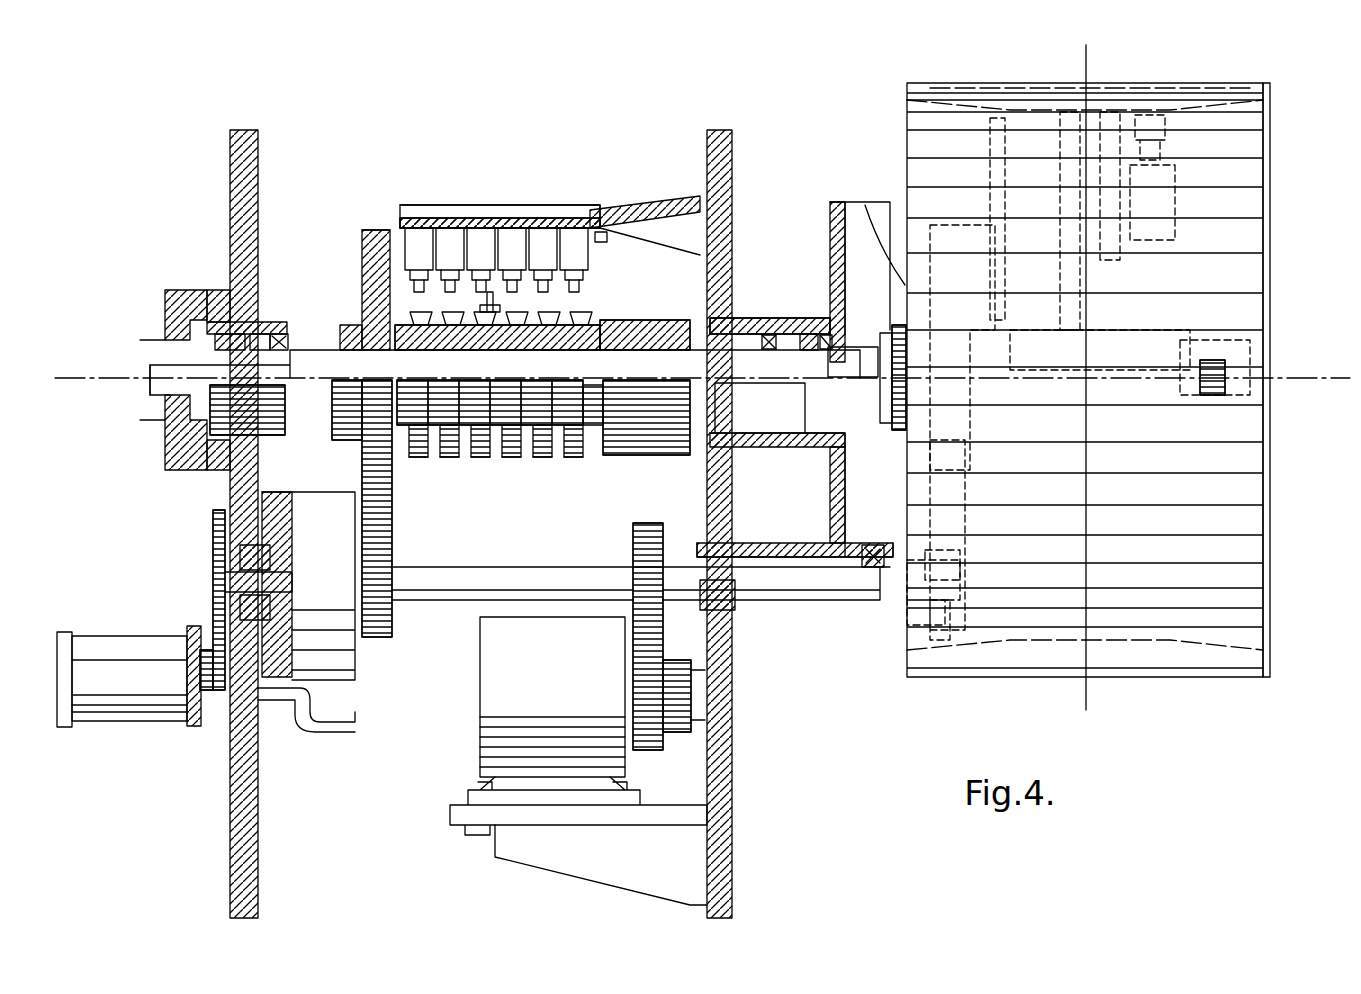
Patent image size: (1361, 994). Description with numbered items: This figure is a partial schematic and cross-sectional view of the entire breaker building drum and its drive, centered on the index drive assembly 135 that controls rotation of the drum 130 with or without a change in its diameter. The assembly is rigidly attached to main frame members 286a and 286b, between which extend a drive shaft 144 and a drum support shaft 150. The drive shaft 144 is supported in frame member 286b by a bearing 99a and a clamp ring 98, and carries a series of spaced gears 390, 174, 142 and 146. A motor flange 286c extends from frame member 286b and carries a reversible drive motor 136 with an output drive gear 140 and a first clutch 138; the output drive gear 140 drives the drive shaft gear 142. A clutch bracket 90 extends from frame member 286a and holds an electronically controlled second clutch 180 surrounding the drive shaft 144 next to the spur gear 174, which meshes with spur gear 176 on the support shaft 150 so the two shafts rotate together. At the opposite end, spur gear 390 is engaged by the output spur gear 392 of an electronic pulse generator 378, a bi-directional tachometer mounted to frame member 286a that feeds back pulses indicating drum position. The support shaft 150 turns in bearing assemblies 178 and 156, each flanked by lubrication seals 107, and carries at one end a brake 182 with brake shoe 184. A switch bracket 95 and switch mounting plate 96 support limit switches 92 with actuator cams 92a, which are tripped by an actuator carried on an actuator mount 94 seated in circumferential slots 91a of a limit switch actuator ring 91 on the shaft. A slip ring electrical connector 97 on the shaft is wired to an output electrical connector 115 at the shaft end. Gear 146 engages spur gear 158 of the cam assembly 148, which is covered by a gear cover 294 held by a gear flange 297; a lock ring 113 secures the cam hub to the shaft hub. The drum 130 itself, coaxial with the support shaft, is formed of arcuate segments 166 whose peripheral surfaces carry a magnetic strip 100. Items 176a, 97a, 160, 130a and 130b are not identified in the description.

The main frame member 286a is at (260, 147).
The main frame member 286b is at (734, 147).
The motor flange 286c is at (590, 868).
The index drive assembly 135 is at (449, 136).
The spur gear 176 is at (362, 243).
The hub flange 176a is at (378, 228).
The spur gear 174 is at (394, 632).
The drum support shaft 150 is at (314, 352).
The brake 182 is at (119, 330).
The brake shoe 184 is at (216, 290).
The bearing assembly 178 is at (245, 335).
The lubrication seal 107 is at (280, 334).
The cam discs 97a is at (510, 457).
The limit switch 92 is at (592, 244).
The actuator cam 92a is at (595, 277).
The switch bracket 95 is at (530, 218).
The switch mounting plate 96 is at (655, 208).
The limit switch actuator ring 91 is at (605, 328).
The circumferential slot 91a is at (572, 322).
The actuator mount 94 is at (503, 318).
The slip ring electrical connector 97 is at (682, 322).
The gear flange 297 is at (830, 215).
The gear cover 294 is at (856, 205).
The bearing assembly 156 is at (803, 332).
The lock ring 113 is at (888, 330).
The spline 160 is at (900, 432).
The clamp ring 98 is at (888, 540).
The bearing 99a is at (866, 545).
The drive shaft 144 is at (490, 570).
The drive shaft gear 142 is at (632, 533).
The output drive gear 140 is at (652, 748).
The first clutch 138 is at (683, 673).
The reversible drive motor 136 is at (478, 690).
The second clutch 180 is at (355, 682).
The clutch bracket 90 is at (300, 735).
The spur gear 390 is at (212, 525).
The output spur gear 392 is at (218, 692).
The electronic pulse generator 378 is at (105, 700).
The drum 130 is at (1292, 180).
The spindle axis 130a is at (108, 385).
The vertical axis 130b is at (1090, 68).
The magnetic strip 100 is at (1195, 85).
The arcuate segment 166 is at (1260, 90).
The spur gear 158 is at (975, 425).
The cam assembly 148 is at (975, 464).
The gear 146 is at (965, 553).
The output electrical connector 115 is at (1250, 357).